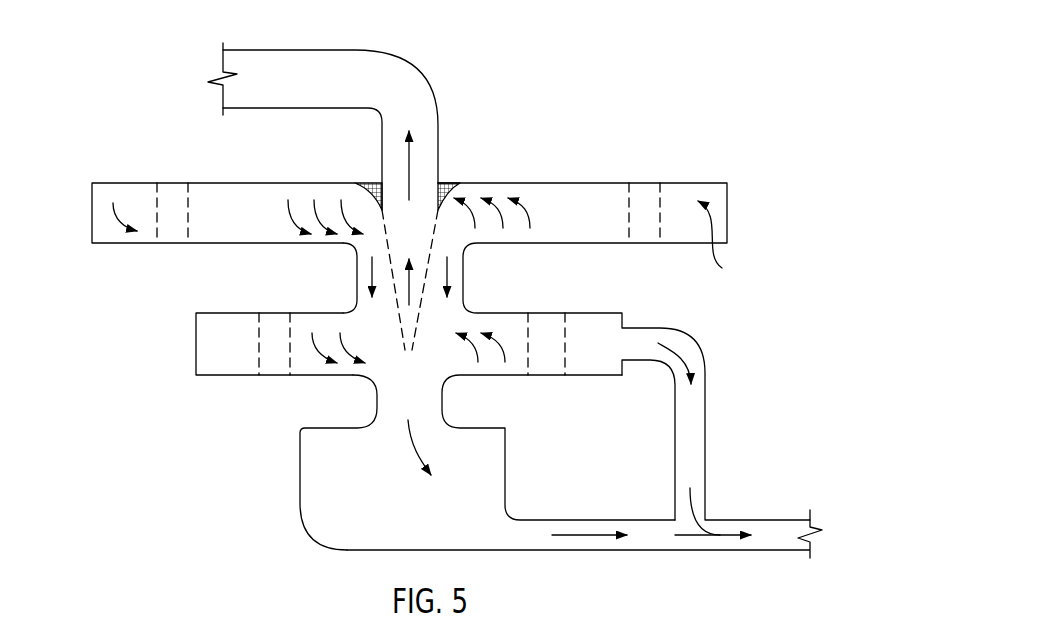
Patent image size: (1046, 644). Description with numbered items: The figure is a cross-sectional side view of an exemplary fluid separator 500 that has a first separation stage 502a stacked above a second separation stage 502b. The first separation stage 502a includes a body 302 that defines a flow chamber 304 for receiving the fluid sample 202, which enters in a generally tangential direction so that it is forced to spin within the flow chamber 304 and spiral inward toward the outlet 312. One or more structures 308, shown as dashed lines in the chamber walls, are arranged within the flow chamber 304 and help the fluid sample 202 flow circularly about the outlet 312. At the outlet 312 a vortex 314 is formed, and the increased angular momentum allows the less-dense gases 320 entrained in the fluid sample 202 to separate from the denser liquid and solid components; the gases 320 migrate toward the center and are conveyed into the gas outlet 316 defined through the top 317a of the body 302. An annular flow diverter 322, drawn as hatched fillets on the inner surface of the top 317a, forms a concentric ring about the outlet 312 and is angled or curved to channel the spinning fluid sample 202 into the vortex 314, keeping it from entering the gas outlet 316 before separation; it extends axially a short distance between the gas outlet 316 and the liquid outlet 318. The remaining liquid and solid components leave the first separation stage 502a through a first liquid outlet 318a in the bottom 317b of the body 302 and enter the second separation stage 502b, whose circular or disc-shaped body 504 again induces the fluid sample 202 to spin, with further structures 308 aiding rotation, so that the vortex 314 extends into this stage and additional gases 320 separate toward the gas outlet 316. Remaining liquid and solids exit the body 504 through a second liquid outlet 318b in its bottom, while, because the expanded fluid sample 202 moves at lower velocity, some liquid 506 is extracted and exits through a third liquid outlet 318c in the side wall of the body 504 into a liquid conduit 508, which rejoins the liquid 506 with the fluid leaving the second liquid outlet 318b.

The fluid separator 500 is at (574, 77).
The gas outlet 316 is at (332, 50).
The outlet 312 is at (445, 169).
The annular flow diverter 322 is at (373, 182).
The flow chamber 304 is at (229, 185).
The first separation stage 502a is at (77, 180).
The body 302 is at (727, 211).
The top 317a is at (588, 184).
The bottom 317b is at (612, 245).
The structures 308 is at (188, 228).
The vortex 314 is at (385, 238).
The first liquid outlet 318a is at (358, 288).
The second separation stage 502b is at (177, 330).
The body 504 is at (196, 364).
The second liquid outlet 318b is at (378, 392).
The third liquid outlet 318c is at (625, 338).
The liquid 506 is at (692, 353).
The liquid conduit 508 is at (705, 430).
The liquid outlet 318 is at (565, 520).
The gases 320 is at (410, 153).
The fluid sample 202 is at (118, 228).